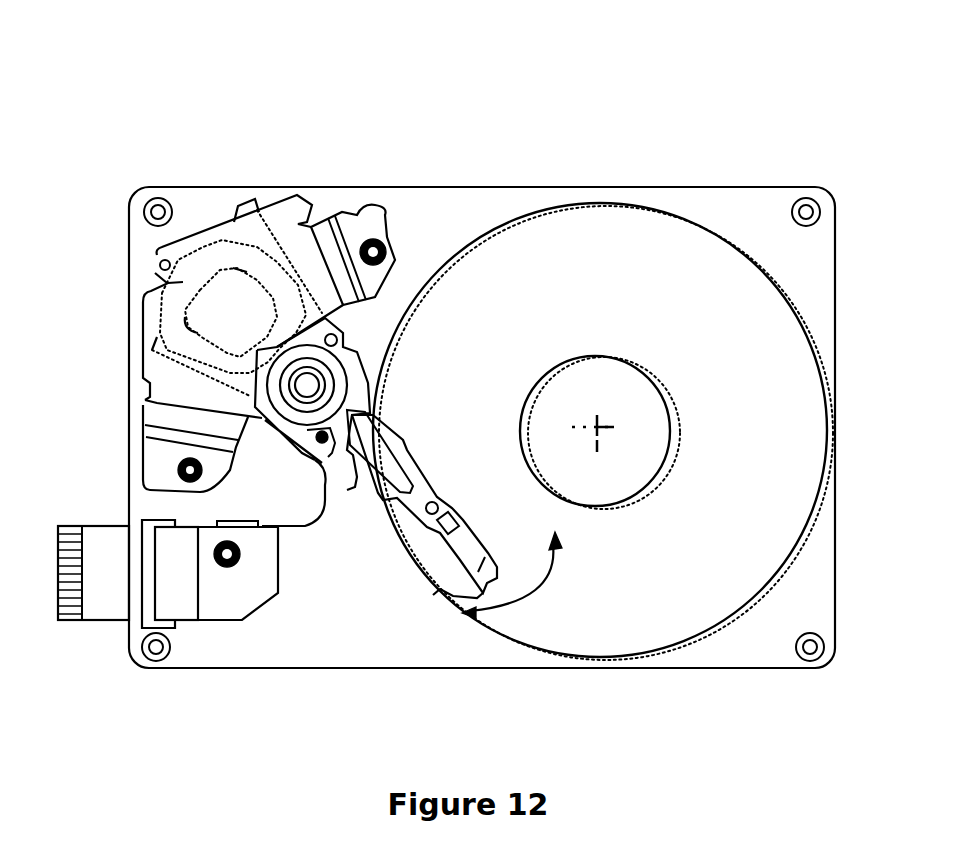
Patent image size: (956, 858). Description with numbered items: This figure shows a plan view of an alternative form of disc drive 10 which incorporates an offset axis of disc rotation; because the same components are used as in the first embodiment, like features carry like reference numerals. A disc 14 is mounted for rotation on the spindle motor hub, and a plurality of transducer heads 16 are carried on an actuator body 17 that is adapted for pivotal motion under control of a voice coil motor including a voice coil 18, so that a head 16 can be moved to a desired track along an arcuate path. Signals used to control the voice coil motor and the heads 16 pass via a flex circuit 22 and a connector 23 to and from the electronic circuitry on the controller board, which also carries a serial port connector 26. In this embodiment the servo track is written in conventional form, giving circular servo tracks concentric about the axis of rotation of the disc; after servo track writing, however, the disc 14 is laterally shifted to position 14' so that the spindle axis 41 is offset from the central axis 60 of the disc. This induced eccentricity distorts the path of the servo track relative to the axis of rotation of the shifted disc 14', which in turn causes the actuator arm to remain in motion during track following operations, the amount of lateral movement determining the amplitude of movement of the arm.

The disc drive 10 is at (541, 82).
The disc 14 is at (600, 393).
The laterally shifted disc position 14' is at (606, 482).
The transducer head 16 is at (437, 590).
The actuator body 17 is at (330, 447).
The voice coil 18 is at (208, 263).
The flex circuit 22 is at (305, 527).
The connector 23 is at (245, 595).
The serial port connector 26 is at (58, 597).
The spindle axis 41 is at (598, 425).
The central axis of the disc 60 is at (605, 427).